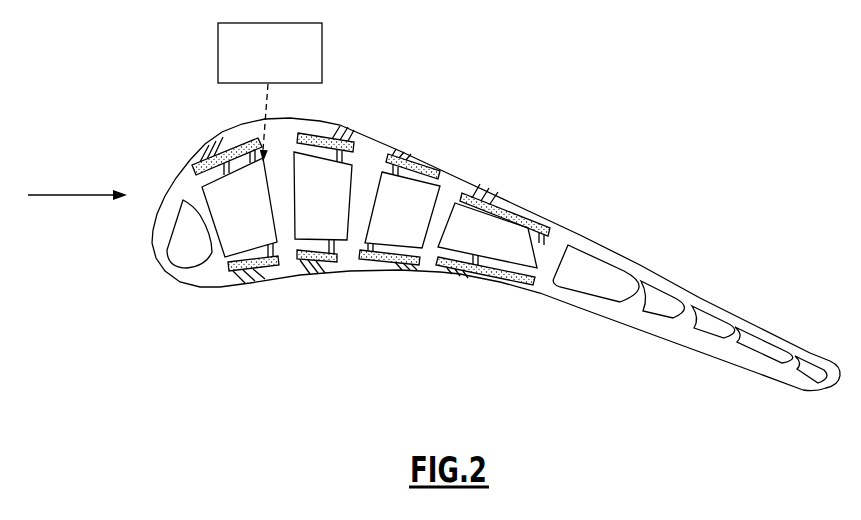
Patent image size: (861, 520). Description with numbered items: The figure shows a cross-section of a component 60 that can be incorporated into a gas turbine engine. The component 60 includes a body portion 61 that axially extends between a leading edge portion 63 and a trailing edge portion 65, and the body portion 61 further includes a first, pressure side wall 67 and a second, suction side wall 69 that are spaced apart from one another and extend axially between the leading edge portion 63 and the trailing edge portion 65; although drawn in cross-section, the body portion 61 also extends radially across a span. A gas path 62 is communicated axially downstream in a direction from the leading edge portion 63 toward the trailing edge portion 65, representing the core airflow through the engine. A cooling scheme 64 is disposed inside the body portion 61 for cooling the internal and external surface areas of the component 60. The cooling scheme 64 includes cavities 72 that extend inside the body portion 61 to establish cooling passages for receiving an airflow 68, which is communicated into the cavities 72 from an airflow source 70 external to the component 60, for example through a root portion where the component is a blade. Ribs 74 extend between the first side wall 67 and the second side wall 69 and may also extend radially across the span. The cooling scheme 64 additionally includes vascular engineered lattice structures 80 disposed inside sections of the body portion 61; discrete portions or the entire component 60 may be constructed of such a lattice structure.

The component 60 is at (438, 234).
The body portion 61 is at (575, 226).
The gas path 62 is at (62, 196).
The leading edge portion 63 is at (139, 253).
The cooling scheme 64 is at (218, 291).
The trailing edge portion 65 is at (805, 402).
The first side wall 67 is at (349, 272).
The airflow 68 is at (268, 110).
The second side wall 69 is at (383, 143).
The airflow source 70 is at (322, 53).
The cavities 72 is at (201, 253).
The ribs 74 is at (264, 234).
The vascular engineered lattice structures 80 is at (222, 150).